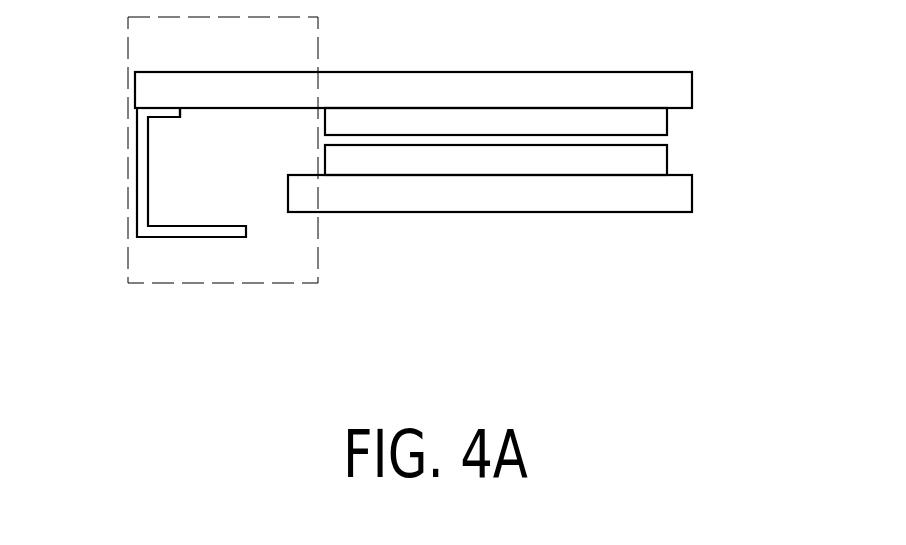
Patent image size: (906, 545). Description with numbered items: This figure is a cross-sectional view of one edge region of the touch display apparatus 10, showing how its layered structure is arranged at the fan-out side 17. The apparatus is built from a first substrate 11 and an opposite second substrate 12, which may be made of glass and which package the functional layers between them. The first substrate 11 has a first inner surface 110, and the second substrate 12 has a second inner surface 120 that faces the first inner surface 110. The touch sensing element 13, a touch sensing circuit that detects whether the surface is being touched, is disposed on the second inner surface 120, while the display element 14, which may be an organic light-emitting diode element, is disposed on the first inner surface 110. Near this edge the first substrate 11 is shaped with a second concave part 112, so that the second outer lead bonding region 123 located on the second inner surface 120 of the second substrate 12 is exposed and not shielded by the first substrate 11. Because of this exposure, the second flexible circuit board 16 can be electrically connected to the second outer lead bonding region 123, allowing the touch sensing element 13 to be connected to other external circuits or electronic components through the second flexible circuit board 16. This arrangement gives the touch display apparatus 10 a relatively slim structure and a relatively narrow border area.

The touch display apparatus 10 is at (745, 357).
The first substrate 11 is at (673, 196).
The first inner surface 110 is at (600, 178).
The second concave part 112 is at (270, 183).
The second substrate 12 is at (673, 93).
The second inner surface 120 is at (600, 105).
The second outer lead bonding region 123 is at (193, 119).
The touch sensing element 13 is at (643, 125).
The display element 14 is at (643, 160).
The second flexible circuit board 16 is at (140, 233).
The fan-out side 17 is at (265, 283).